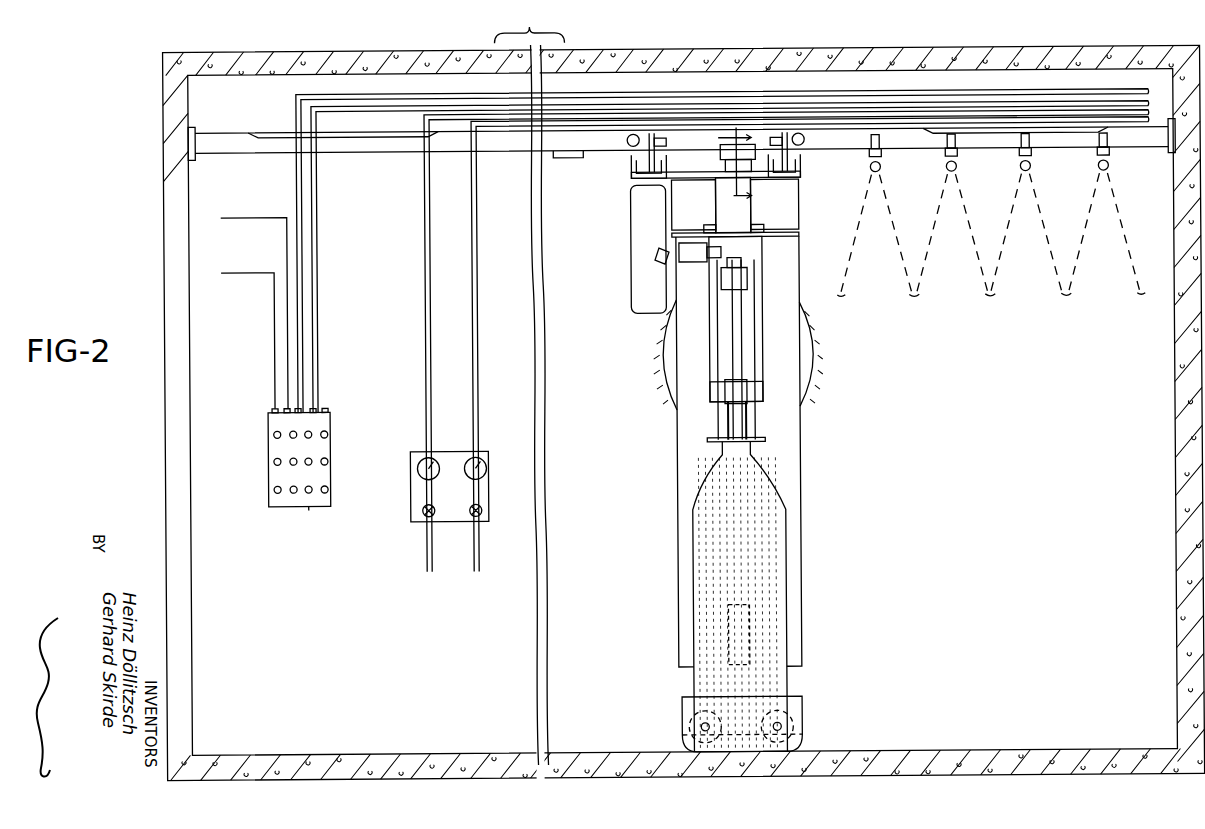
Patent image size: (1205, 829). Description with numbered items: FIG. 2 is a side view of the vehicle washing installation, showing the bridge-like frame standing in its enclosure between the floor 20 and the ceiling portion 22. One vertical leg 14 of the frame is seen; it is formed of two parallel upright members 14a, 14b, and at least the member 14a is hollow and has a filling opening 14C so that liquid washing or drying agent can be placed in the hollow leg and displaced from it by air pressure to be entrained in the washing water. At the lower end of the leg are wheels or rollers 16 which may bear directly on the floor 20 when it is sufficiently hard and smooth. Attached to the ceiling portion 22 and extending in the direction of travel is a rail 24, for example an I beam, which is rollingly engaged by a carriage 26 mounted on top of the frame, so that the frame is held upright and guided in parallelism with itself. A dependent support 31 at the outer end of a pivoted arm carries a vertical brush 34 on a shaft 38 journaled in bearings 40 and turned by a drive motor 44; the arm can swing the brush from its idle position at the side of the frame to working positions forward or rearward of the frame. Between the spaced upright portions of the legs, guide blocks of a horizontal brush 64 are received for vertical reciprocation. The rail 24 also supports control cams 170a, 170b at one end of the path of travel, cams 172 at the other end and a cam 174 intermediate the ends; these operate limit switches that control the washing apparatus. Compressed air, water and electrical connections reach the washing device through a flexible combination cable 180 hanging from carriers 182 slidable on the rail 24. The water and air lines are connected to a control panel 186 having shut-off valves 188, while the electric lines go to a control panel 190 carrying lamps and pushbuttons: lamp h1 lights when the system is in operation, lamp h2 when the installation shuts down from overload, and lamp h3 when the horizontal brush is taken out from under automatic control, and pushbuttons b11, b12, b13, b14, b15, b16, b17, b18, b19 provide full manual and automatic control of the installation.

The vertical leg 14 is at (809, 474).
The upright member 14a is at (683, 424).
The upright member 14b is at (790, 435).
The filling opening 14C is at (657, 257).
The wheels or rollers 16 is at (795, 727).
The floor 20 is at (360, 760).
The ceiling portion 22 is at (860, 54).
The rail 24 is at (508, 143).
The carriage 26 is at (793, 132).
The dependent support 31 is at (722, 348).
The vertical brush 34 is at (775, 573).
The shaft 38 is at (735, 343).
The bearings 40 is at (740, 394).
The drive motor 44 is at (688, 262).
The horizontal brush 64 is at (822, 381).
The control cam 170a is at (983, 135).
The control cam 170b is at (337, 140).
The cams 172 is at (282, 146).
The cam 174 is at (573, 150).
The flexible combination cable 180 is at (852, 297).
The carriers 182 is at (955, 160).
The control panel 186 is at (452, 450).
The shut-off valves 188 is at (470, 515).
The control panel 190 is at (330, 412).
The lamp h1 is at (313, 406).
The lamp h2 is at (268, 412).
The lamp h3 is at (308, 506).
The pushbutton b11 is at (273, 461).
The pushbutton b12 is at (273, 432).
The pushbutton b13 is at (328, 461).
The pushbutton b14 is at (328, 432).
The pushbutton b15 is at (290, 462).
The pushbutton b16 is at (312, 459).
The pushbutton b17 is at (328, 487).
The pushbutton b18 is at (293, 490).
The pushbutton b19 is at (274, 490).